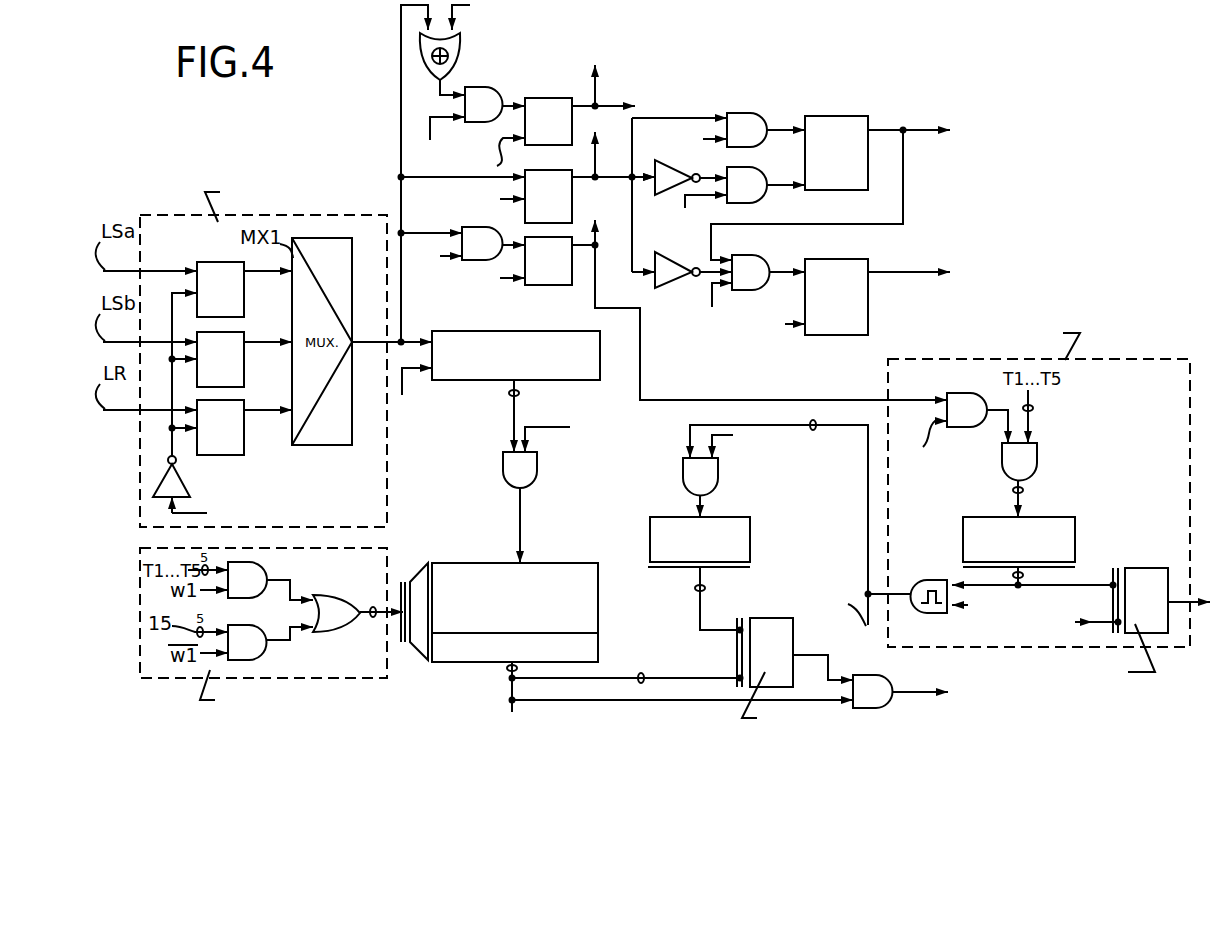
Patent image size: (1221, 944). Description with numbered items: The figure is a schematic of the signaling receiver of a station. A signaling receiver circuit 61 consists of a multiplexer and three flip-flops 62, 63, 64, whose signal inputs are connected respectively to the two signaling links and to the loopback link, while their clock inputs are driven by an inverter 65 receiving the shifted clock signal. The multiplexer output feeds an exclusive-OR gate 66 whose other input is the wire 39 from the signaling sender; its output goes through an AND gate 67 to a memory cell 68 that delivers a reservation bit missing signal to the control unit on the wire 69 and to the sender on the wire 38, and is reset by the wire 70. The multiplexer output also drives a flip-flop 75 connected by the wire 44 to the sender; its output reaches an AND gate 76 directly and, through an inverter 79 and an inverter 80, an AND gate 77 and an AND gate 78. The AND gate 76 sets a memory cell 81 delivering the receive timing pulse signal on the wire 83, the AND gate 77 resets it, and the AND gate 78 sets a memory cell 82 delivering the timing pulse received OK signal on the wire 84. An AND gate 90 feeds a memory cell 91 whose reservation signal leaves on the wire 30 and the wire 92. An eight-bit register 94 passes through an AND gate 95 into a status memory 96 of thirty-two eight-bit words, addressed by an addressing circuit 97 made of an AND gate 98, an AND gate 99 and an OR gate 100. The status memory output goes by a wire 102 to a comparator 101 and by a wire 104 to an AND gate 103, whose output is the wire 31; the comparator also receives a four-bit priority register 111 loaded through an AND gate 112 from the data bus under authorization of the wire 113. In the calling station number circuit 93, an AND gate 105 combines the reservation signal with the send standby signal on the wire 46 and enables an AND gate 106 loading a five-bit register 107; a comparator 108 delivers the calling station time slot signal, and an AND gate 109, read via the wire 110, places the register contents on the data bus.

The signaling receiver circuit 61 is at (166, 217).
The flip-flop 62 is at (215, 262).
The flip-flop 63 is at (235, 340).
The flip-flop 64 is at (240, 440).
The inverter 65 is at (183, 487).
The exclusive-OR gate 66 is at (458, 62).
The AND gate 67 is at (490, 96).
The memory cell 68 is at (553, 98).
The wire 69 is at (605, 80).
The wire 38 is at (612, 105).
The wire 70 is at (482, 157).
The flip-flop 75 is at (537, 176).
The wire 44 is at (606, 165).
The AND gate 90 is at (473, 232).
The memory cell 91 is at (553, 285).
The wire 30 is at (604, 240).
The wire 39 is at (470, 5).
The wire 92 is at (643, 340).
The AND gate 76 is at (745, 113).
The AND gate 77 is at (752, 183).
The AND gate 78 is at (758, 258).
The inverter 79 is at (676, 172).
The inverter 80 is at (666, 281).
The memory cell 81 is at (828, 116).
The memory cell 82 is at (860, 285).
The wire 83 is at (926, 128).
The wire 84 is at (920, 270).
The 8-bit register 94 is at (486, 381).
The AND gate 95 is at (502, 473).
The status memory 96 is at (490, 567).
The addressing circuit 97 is at (330, 650).
The AND gate 98 is at (250, 583).
The AND gate 99 is at (250, 640).
The OR gate 100 is at (336, 603).
The comparator 101 is at (765, 620).
The wire 102 is at (695, 678).
The AND gate 103 is at (872, 687).
The wire 104 is at (605, 698).
The wire 31 is at (911, 690).
The calling station number circuit 93 is at (1116, 365).
The AND gate 105 is at (961, 400).
The wire 46 is at (922, 444).
The AND gate 106 is at (1031, 461).
The 5-bit register 107 is at (965, 530).
The comparator 108 is at (1151, 568).
The AND gate 109 is at (930, 580).
The wire 110 is at (968, 605).
The priority register 111 is at (752, 530).
The AND gate 112 is at (688, 481).
The wire 113 is at (733, 435).